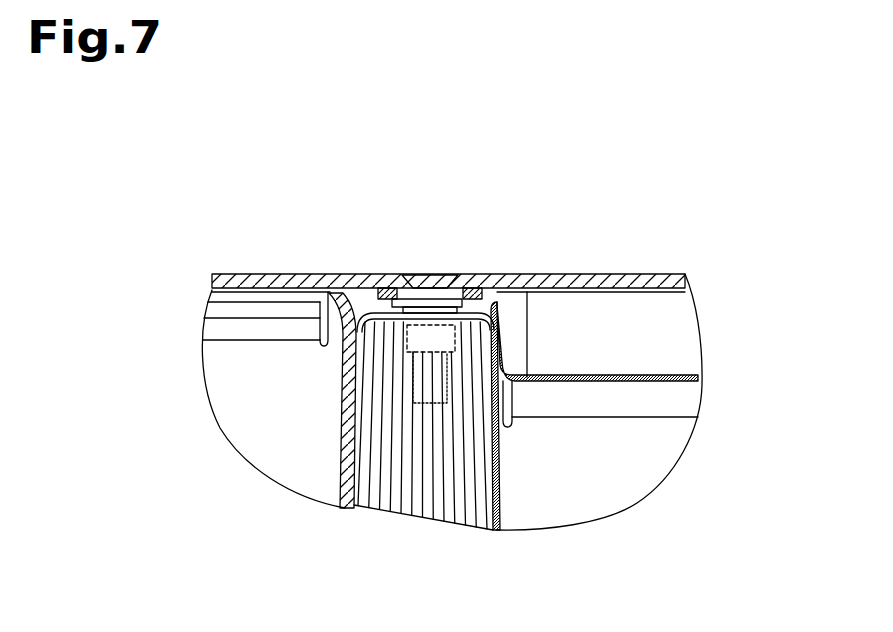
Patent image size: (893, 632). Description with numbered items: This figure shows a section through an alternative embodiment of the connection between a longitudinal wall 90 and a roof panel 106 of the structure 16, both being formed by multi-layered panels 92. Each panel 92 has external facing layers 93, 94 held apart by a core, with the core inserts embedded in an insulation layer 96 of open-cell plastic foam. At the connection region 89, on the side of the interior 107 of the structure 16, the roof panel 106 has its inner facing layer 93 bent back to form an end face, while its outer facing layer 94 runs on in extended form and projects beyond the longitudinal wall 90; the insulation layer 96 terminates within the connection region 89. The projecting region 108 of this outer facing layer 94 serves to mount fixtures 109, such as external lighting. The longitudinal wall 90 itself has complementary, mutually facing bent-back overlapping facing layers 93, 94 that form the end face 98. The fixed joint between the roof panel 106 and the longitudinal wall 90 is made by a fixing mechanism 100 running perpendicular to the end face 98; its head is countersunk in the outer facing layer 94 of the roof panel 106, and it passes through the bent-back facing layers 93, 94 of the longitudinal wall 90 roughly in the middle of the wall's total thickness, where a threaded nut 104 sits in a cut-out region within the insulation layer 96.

The structure 16 is at (505, 229).
The connection region 89 is at (530, 228).
The longitudinal wall 90 is at (416, 535).
The multi-layered panel 92 is at (633, 308).
The inner facing layer 93 is at (662, 378).
The outer facing layer 94 is at (605, 272).
The insulation layer 96 is at (672, 330).
The end face 98 is at (440, 285).
The fixing mechanism 100 is at (432, 308).
The threaded nut 104 is at (420, 387).
The roof panel 106 is at (720, 373).
The interior 107 is at (642, 472).
The projecting region of the facing layer 108 is at (243, 259).
The fixtures 109 is at (237, 330).